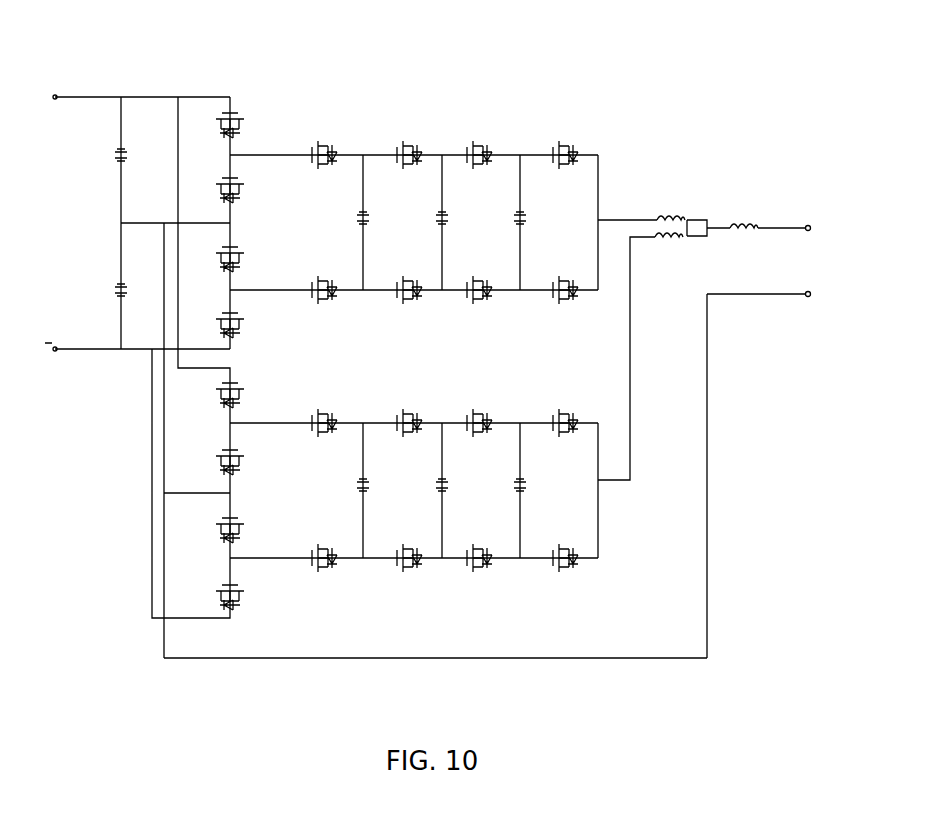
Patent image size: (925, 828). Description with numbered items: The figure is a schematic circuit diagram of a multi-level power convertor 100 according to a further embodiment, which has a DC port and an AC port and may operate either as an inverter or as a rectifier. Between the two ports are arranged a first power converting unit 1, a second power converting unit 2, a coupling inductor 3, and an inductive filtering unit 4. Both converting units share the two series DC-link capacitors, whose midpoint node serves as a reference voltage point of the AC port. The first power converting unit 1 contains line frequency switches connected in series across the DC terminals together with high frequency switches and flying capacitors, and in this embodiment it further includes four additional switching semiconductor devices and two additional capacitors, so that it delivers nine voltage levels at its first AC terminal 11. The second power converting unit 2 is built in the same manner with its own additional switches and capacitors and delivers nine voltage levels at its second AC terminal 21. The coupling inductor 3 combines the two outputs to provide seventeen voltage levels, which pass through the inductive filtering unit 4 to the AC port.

The multi-level power convertor 100 is at (151, 40).
The first power converting unit 1 is at (224, 86).
The second power converting unit 2 is at (147, 485).
The coupling inductor 3 is at (672, 215).
The inductive filtering unit 4 is at (740, 225).
The first AC terminal 11 is at (623, 218).
The second AC terminal 21 is at (617, 483).